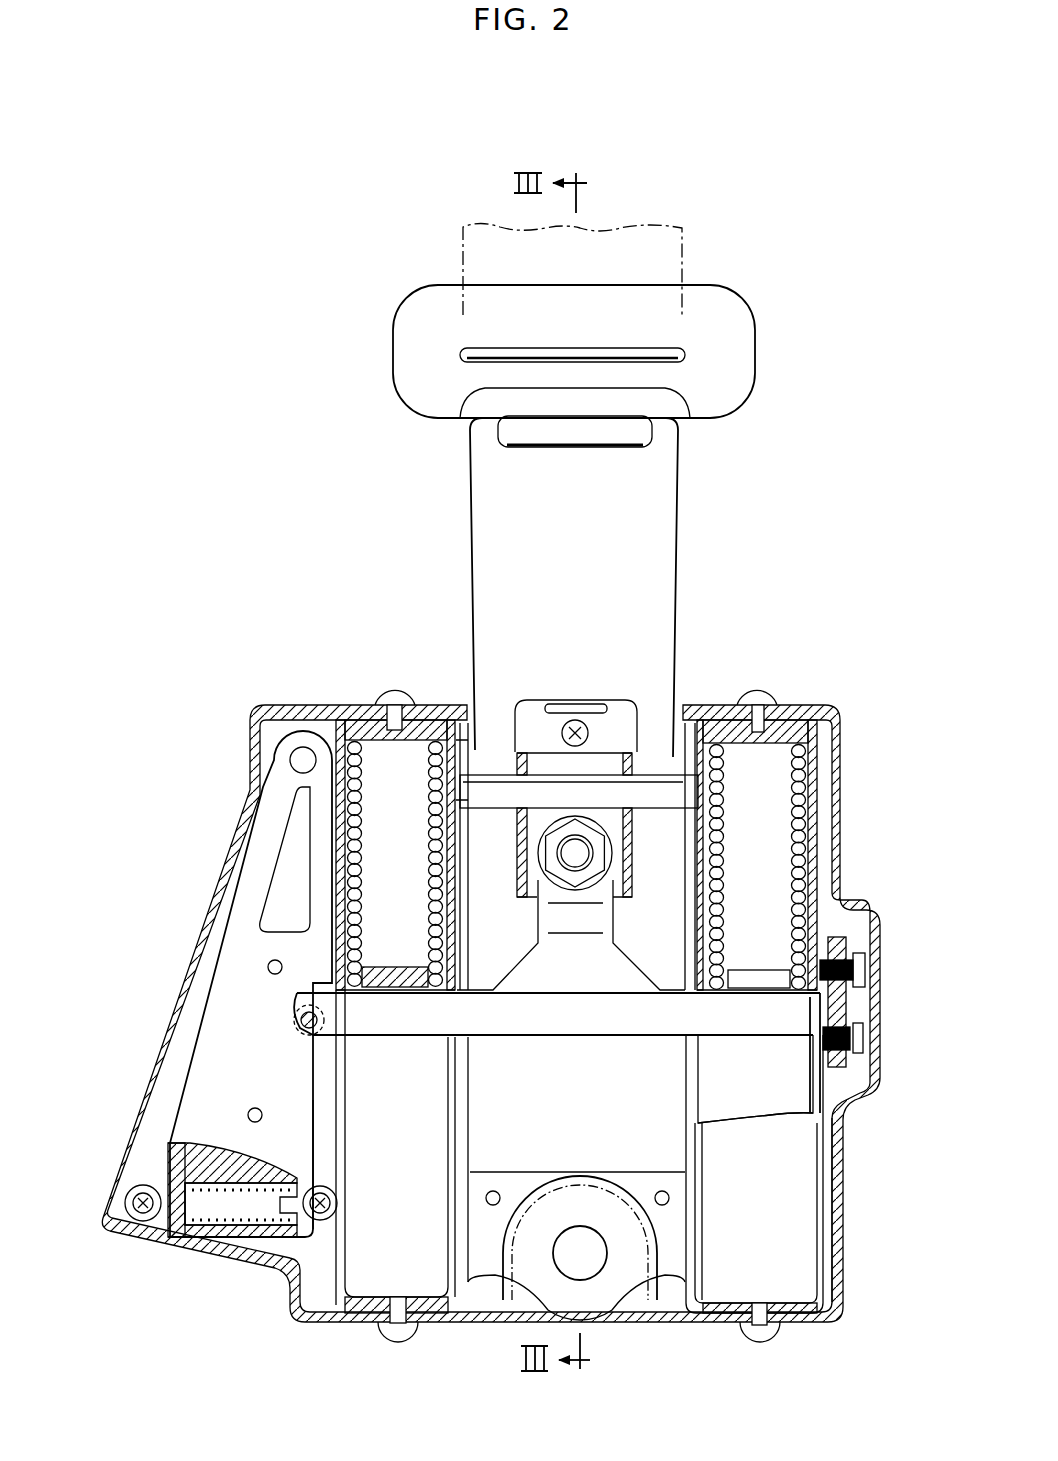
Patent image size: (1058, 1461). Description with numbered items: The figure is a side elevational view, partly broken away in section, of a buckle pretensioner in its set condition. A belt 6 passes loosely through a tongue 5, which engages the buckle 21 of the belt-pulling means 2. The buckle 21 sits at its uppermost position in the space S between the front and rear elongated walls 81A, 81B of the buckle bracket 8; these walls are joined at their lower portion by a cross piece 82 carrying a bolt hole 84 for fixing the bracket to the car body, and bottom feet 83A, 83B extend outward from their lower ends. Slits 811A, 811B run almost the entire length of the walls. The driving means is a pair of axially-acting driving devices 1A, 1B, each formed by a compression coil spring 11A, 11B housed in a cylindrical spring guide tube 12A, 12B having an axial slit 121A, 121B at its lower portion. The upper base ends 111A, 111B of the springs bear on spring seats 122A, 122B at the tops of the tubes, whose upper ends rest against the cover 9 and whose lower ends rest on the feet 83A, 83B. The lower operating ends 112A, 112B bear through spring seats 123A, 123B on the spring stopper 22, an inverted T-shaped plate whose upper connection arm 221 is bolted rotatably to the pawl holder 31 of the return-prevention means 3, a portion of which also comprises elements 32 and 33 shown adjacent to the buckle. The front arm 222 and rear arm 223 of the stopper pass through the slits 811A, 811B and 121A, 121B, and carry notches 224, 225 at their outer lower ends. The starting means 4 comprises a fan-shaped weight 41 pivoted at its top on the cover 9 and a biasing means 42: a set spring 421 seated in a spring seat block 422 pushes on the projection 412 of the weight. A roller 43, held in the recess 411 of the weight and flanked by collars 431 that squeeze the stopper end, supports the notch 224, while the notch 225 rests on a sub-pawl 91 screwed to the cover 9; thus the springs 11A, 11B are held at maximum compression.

The belt-pulling means 2 is at (688, 625).
The buckle 21 is at (470, 510).
The spring stopper 22 is at (518, 1012).
The upper connection arm 221 is at (590, 920).
The front arm 222 is at (405, 1064).
The rear arm 223 is at (722, 1017).
The notch 224 is at (305, 1060).
The notch 225 is at (836, 1062).
The return-prevention means 3 is at (477, 814).
The pawl holder 31 is at (628, 857).
The lock plate leg 32 is at (485, 828).
The latch cap 33 is at (510, 720).
The starting means 4 is at (198, 1037).
The fan-shaped weight 41 is at (250, 1062).
The recess 411 is at (292, 992).
The projection 412 is at (330, 1262).
The biasing means 42 is at (218, 1240).
The set spring 421 is at (272, 1227).
The spring seat block 422 is at (170, 1242).
The roller 43 is at (301, 1032).
The collars 431 is at (292, 1018).
The tongue 5 is at (393, 362).
The belt 6 is at (672, 264).
The buckle bracket 8 is at (530, 1279).
The front elongated wall 81A is at (455, 1215).
The rear elongated wall 81B is at (687, 1150).
The slit 811A is at (465, 1127).
The slit 811B is at (690, 1093).
The cross piece 82 is at (520, 1176).
The bottom foot 83A is at (350, 1322).
The bottom foot 83B is at (797, 1322).
The bolt hole 84 is at (593, 1280).
The cover 9 is at (247, 748).
The sub-pawl 91 is at (878, 1010).
The axially-acting driving device 1A is at (375, 678).
The axially-acting driving device 1B is at (787, 680).
The compression coil spring 11A is at (360, 808).
The compression coil spring 11B is at (725, 808).
The upper base end 111A is at (428, 745).
The upper base end 111B is at (720, 752).
The lower operating end 112A is at (385, 965).
The lower operating end 112B is at (775, 970).
The spring guide tube 12A is at (348, 858).
The spring guide tube 12B is at (812, 812).
The axial slit 121A is at (345, 1093).
The axial slit 121B is at (843, 1113).
The spring seat 122A is at (353, 727).
The spring seat 122B is at (713, 712).
The spring seat 123A is at (417, 1045).
The spring seat 123B is at (756, 1041).
The space S is at (600, 1094).